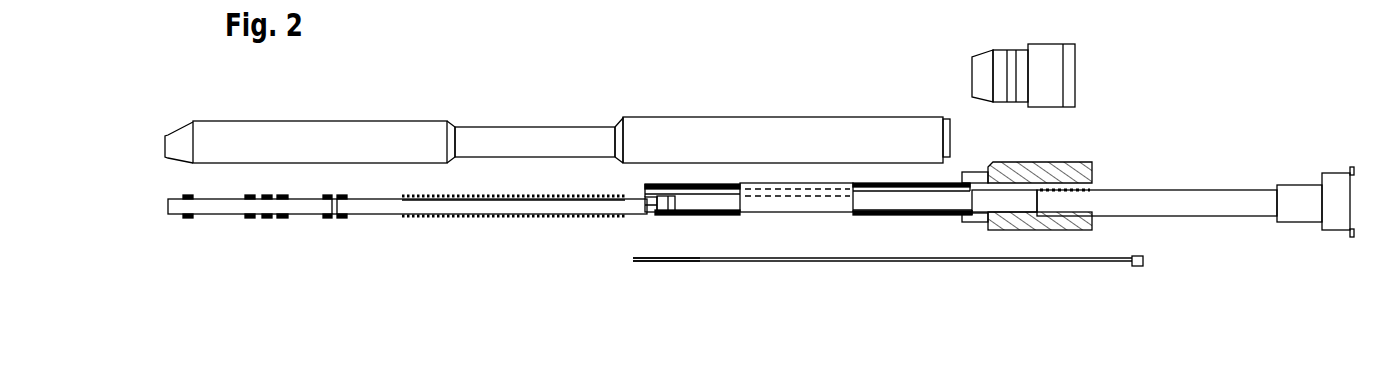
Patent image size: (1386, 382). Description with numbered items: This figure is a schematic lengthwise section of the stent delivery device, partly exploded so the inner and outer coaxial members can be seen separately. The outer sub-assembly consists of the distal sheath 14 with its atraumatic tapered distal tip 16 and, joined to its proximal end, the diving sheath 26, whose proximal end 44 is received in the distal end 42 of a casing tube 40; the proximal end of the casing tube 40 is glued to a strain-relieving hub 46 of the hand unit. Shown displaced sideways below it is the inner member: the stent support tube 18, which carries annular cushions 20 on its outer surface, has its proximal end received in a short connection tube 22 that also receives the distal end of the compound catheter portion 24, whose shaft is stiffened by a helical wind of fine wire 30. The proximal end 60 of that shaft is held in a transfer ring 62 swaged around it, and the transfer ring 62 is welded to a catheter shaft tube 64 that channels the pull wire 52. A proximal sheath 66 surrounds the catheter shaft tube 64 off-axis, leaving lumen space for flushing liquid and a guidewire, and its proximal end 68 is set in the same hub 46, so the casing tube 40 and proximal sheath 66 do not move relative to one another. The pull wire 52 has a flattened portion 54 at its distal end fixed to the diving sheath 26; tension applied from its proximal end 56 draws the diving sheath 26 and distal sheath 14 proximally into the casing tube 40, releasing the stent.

The distal sheath 14 is at (333, 133).
The atraumatic tapered distal tip 16 is at (180, 135).
The stent support tube 18 is at (222, 208).
The annular cushions 20 is at (268, 215).
The connection tube 22 is at (333, 218).
The compound catheter portion 24 is at (548, 195).
The diving sheath 26 is at (507, 138).
The helical wind of fine wire 30 is at (445, 218).
The casing tube 40 is at (703, 130).
The distal end of casing tube 42 is at (617, 130).
The proximal end of diving sheath 44 is at (612, 142).
The strain-relieving hub 46 is at (1005, 47).
The pull wire 52 is at (962, 262).
The flattened portion 54 is at (672, 262).
The proximal end of pull wire 56 is at (1145, 258).
The proximal end of tube 60 is at (672, 198).
The transfer ring 62 is at (645, 200).
The catheter shaft tube 64 is at (898, 188).
The proximal sheath 66 is at (808, 203).
The proximal end of sheath 68 is at (955, 172).